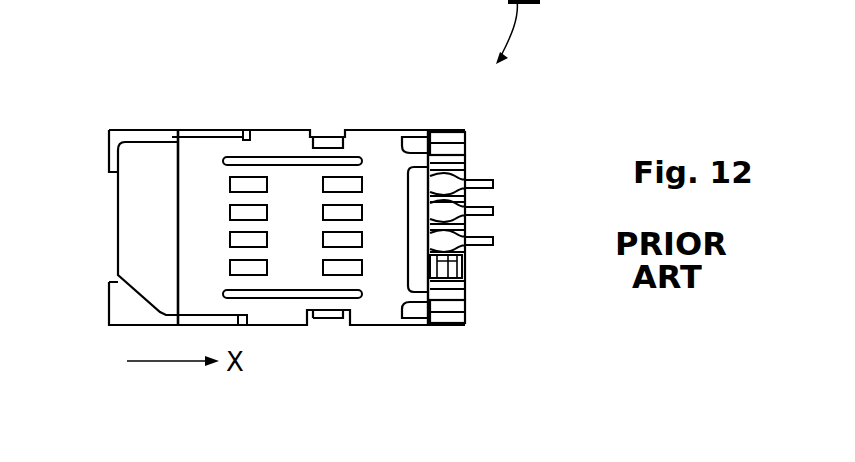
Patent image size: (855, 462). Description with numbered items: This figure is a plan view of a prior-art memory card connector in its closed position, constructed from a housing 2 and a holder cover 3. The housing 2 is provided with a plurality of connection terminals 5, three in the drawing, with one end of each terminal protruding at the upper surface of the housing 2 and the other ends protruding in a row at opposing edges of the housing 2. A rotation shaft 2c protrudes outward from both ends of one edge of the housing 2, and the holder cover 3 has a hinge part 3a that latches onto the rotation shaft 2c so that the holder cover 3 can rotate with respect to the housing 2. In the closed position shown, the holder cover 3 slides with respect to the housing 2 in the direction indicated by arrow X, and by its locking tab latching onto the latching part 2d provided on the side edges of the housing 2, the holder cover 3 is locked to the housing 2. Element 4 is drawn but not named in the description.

The housing 2 is at (148, 130).
The holder cover 3 is at (277, 130).
The slide member 4 is at (118, 258).
The connection terminals 5 is at (493, 184).
The rotation shaft 2c is at (438, 130).
The latching part 2d is at (328, 130).
The hinge part 3a is at (412, 130).